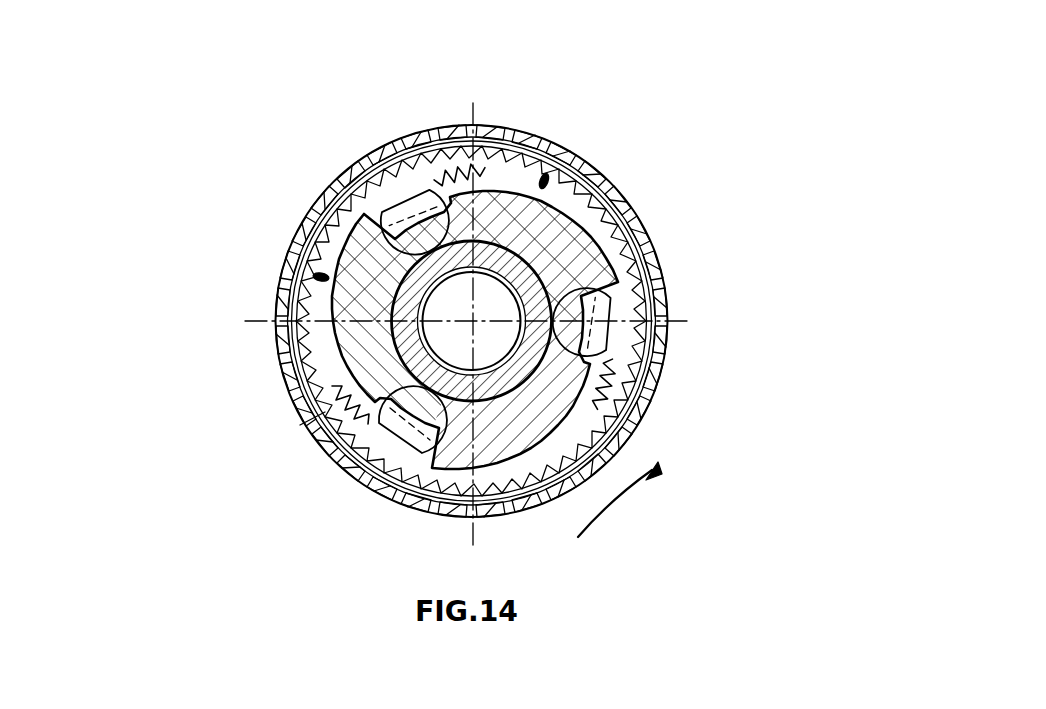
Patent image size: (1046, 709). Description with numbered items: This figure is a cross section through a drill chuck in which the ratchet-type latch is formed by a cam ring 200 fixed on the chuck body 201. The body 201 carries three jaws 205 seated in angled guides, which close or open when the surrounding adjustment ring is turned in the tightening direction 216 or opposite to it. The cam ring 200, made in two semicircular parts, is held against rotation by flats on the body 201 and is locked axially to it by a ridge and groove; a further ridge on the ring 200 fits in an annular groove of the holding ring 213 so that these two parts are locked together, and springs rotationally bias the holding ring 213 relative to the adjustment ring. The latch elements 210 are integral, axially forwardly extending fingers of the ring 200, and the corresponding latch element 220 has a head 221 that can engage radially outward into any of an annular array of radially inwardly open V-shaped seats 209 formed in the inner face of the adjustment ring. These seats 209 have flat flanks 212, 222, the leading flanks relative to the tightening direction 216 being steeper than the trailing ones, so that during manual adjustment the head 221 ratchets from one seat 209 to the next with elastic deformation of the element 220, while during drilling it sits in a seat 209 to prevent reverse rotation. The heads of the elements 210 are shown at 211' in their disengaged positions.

The cam ring 200 is at (330, 293).
The body 201 is at (600, 411).
The jaws 205 is at (388, 155).
The seats 209 is at (502, 123).
The latch element 210 is at (315, 212).
The head in disengaged position 211' is at (257, 441).
The flanks 212 is at (350, 188).
The holding ring 213 is at (362, 160).
The tightening direction 216 is at (612, 505).
The latch element 220 is at (547, 177).
The head 221 is at (292, 355).
The flanks 222 is at (447, 123).